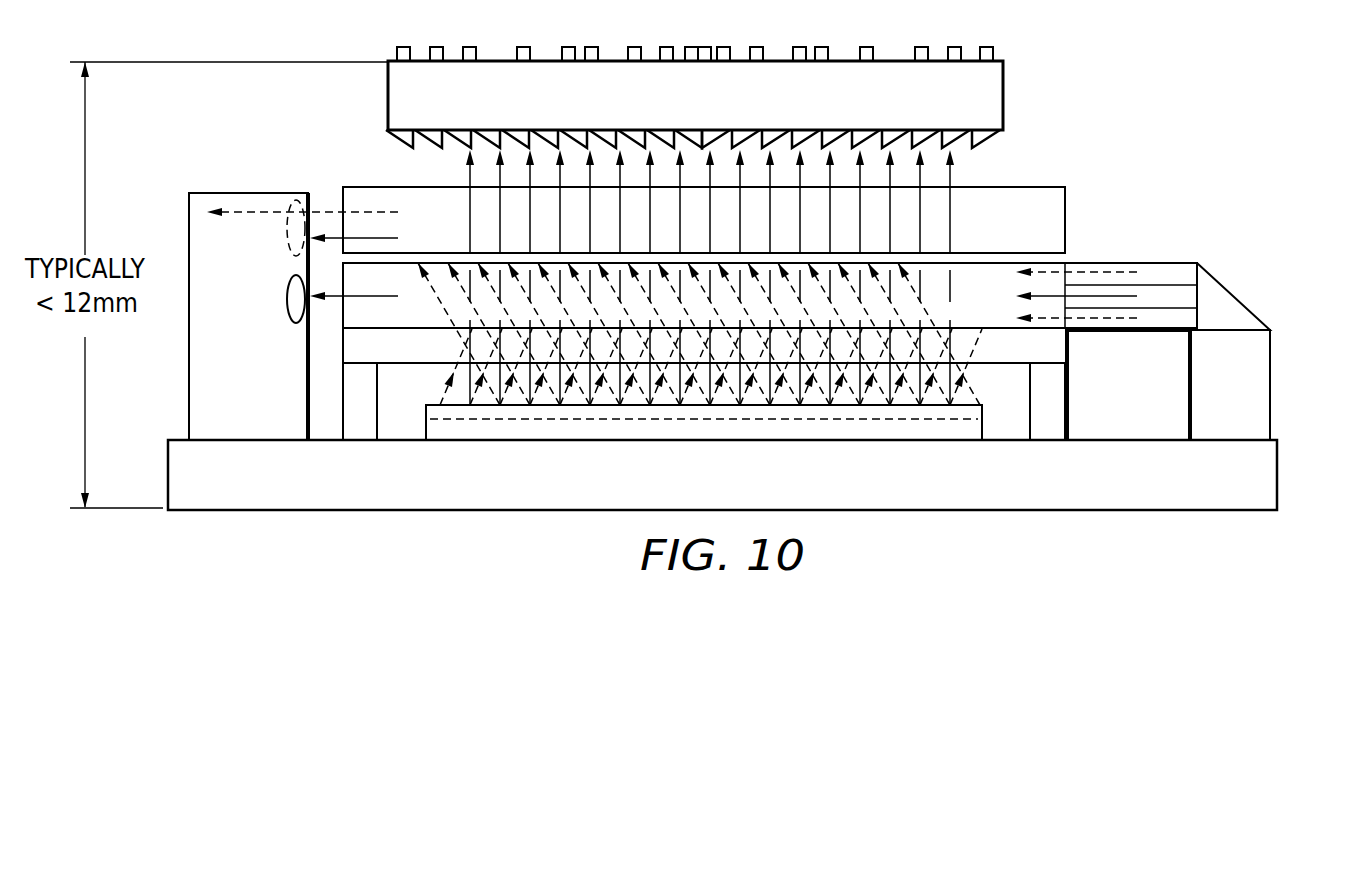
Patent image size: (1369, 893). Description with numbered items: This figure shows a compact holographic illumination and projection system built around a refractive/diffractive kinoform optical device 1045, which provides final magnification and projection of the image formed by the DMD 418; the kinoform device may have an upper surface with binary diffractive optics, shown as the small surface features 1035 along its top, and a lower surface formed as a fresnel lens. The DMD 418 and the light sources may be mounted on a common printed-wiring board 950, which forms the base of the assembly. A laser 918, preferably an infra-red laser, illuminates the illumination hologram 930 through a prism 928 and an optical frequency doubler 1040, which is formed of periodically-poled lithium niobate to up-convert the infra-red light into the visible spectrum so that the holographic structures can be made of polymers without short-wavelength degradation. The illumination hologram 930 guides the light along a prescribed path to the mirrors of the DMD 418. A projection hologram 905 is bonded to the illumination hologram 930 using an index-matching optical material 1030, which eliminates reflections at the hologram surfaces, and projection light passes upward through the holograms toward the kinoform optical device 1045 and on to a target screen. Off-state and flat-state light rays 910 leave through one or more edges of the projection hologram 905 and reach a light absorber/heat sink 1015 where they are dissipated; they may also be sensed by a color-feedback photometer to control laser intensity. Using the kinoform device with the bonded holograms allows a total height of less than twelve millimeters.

The light absorber/heat sink 1015 is at (221, 193).
The off-state and flat-state light rays 910 is at (252, 212).
The projection hologram 905 is at (372, 187).
The pixel elements 1035 is at (1000, 52).
The refractive/diffractive kinoform optical device 1045 is at (1004, 96).
The index-matching optical material 1030 is at (1000, 253).
The optical frequency doubler 1040 is at (1163, 263).
The prism 928 is at (1232, 291).
The laser 918 is at (1272, 390).
The illumination hologram 930 is at (1038, 332).
The DMD 418 is at (985, 425).
The printed-wiring board 950 is at (1170, 512).